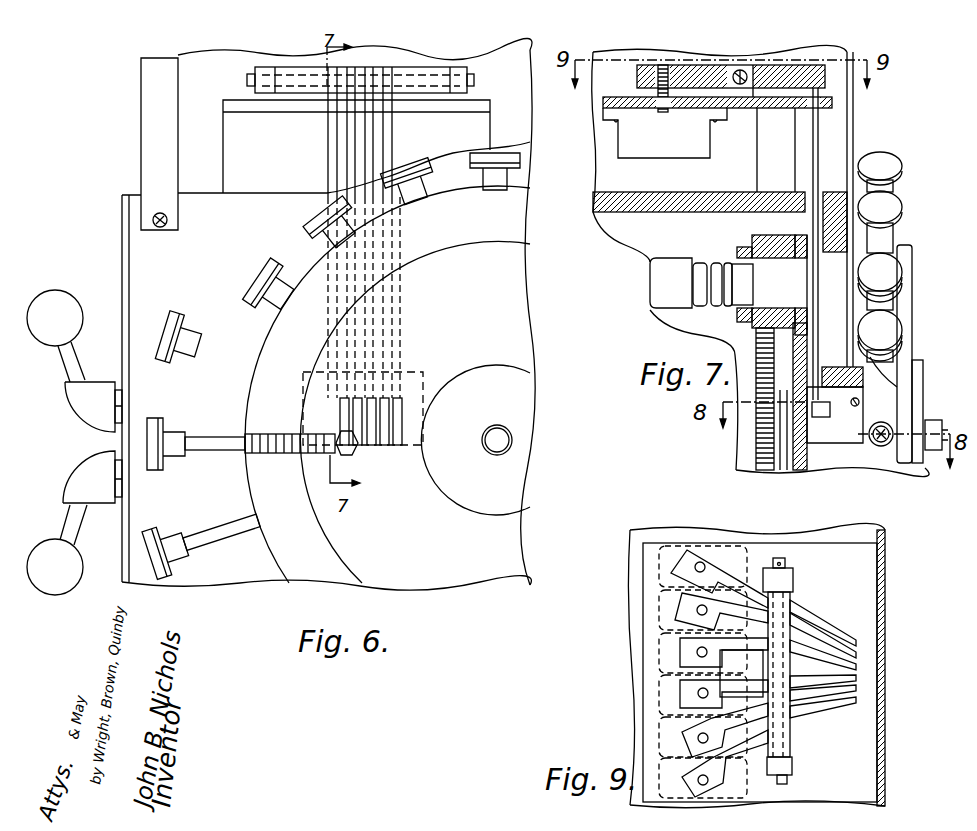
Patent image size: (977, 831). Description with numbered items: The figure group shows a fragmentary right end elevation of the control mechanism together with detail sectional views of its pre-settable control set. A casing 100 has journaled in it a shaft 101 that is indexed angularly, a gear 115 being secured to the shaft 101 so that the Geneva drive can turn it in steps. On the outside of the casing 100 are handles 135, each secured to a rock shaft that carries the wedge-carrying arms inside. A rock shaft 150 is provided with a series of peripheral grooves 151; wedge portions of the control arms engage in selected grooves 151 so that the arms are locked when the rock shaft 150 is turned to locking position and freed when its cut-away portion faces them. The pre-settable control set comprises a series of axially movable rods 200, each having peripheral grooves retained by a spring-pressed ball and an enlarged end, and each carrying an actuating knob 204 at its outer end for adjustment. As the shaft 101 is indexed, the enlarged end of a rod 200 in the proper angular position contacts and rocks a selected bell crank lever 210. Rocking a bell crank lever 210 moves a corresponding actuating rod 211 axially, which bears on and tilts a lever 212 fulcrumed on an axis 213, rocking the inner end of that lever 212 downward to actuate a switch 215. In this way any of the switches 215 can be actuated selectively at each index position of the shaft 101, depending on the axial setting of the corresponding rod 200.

In FIG. 6, the casing 100 is at (126, 193).
In FIG. 6, the shaft 101 is at (513, 440).
In FIG. 7, the shaft 101 is at (976, 338).
In FIG. 7, the gear 115 is at (756, 447).
In FIG. 6, the handle 135 is at (80, 480).
In FIG. 7, the rock shaft 150 is at (652, 290).
In FIG. 7, the peripheral groove 151 is at (712, 260).
In FIG. 6, the axially movable rod 200 is at (232, 527).
In FIG. 7, the axially movable rod 200 is at (880, 447).
In FIG. 6, the actuating knob 204 is at (250, 284).
In FIG. 7, the actuating knob 204 is at (900, 203).
In FIG. 6, the bell crank lever 210 is at (403, 398).
In FIG. 7, the bell crank lever 210 is at (848, 425).
In FIG. 6, the actuating rod 211 is at (336, 164).
In FIG. 7, the actuating rod 211 is at (812, 160).
In FIG. 9, the actuating rod 211 is at (856, 641).
In FIG. 6, the lever 212 is at (330, 80).
In FIG. 7, the lever 212 is at (805, 75).
In FIG. 9, the lever 212 is at (800, 640).
In FIG. 6, the axis 213 is at (247, 80).
In FIG. 7, the axis 213 is at (740, 70).
In FIG. 9, the axis 213 is at (782, 558).
In FIG. 7, the switch 215 is at (665, 158).
In FIG. 9, the switch 215 is at (658, 647).